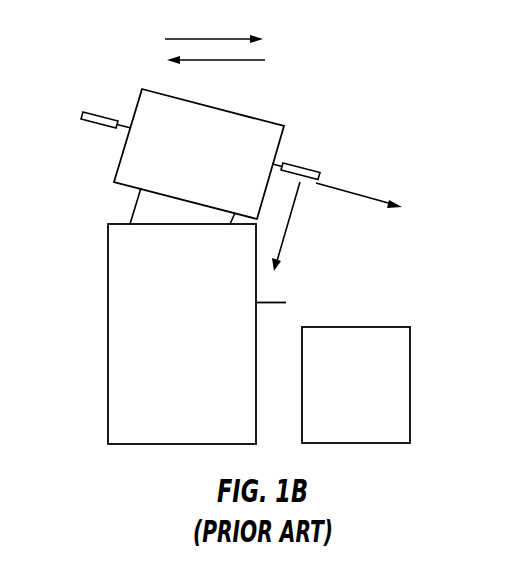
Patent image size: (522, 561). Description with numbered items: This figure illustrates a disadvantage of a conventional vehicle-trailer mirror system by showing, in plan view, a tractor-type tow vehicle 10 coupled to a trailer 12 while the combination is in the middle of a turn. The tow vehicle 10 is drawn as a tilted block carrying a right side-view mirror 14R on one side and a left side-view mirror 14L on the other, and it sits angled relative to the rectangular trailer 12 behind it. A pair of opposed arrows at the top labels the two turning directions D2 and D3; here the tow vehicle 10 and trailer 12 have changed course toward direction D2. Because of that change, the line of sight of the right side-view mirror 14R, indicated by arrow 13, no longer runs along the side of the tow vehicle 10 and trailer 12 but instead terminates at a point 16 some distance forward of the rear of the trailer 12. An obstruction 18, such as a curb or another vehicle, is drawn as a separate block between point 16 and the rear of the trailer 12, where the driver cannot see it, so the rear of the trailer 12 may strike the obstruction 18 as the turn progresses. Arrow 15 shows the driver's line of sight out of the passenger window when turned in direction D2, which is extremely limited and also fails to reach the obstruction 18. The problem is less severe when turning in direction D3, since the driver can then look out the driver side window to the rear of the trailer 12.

The tow vehicle 10 is at (213, 168).
The trailer 12 is at (196, 349).
The arrow indicating line of sight of right side-view mirror 13 is at (288, 233).
The left side-view mirror 14L is at (101, 113).
The right side-view mirror 14R is at (305, 165).
The arrow indicating driver's line of sight out of passenger window 15 is at (365, 193).
The point 16 is at (271, 289).
The obstruction 18 is at (370, 400).
The direction D2 is at (232, 40).
The direction D3 is at (196, 60).